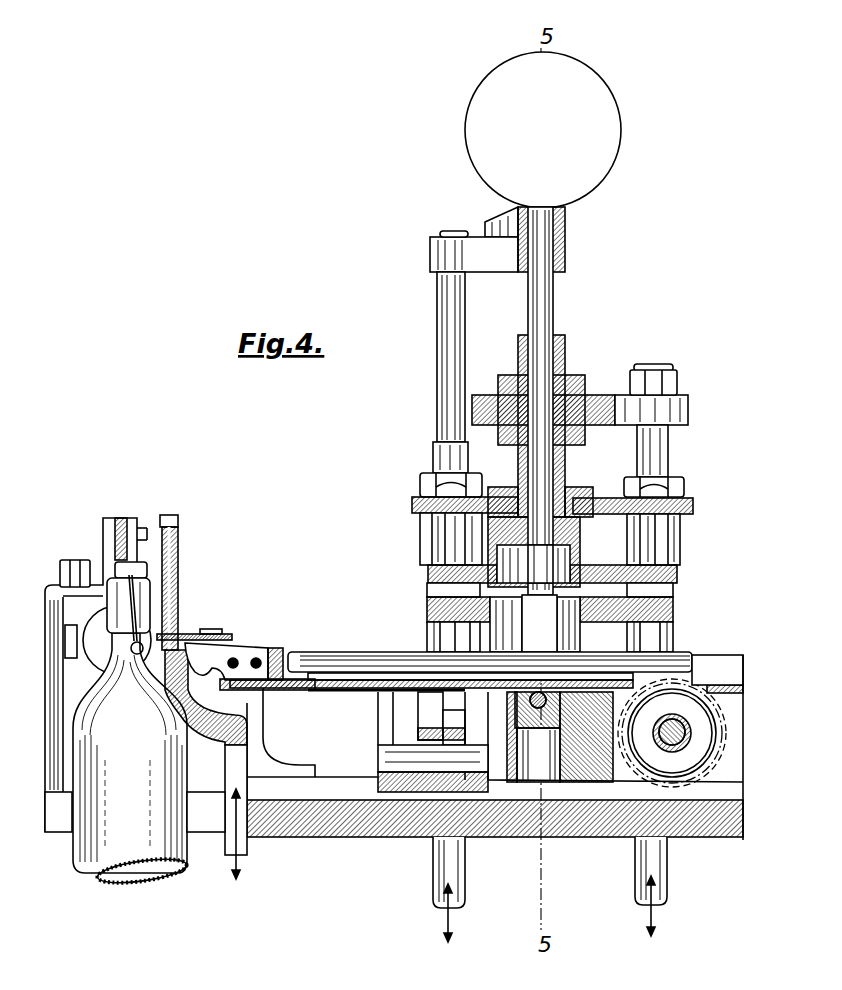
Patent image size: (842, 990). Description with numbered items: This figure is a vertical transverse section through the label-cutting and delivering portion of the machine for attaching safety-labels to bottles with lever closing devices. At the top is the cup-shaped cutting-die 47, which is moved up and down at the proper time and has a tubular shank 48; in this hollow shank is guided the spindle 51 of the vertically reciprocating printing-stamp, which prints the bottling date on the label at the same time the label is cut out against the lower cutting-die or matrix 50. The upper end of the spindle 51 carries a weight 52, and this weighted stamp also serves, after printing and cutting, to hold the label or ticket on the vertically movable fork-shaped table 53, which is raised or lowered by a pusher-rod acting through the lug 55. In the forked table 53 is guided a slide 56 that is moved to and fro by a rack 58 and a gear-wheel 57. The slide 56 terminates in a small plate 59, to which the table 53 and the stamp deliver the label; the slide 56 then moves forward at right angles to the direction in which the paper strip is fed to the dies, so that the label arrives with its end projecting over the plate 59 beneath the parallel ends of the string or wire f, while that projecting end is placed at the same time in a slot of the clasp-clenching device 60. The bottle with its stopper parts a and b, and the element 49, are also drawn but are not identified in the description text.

The cup-shaped cutting-die 47 is at (533, 564).
The tubular shank 48 is at (566, 369).
The bolt 49 is at (645, 437).
The lower cutting-die 50 is at (518, 592).
The spindle 51 is at (547, 314).
The weight 52 is at (606, 142).
The fork-shaped table 53 is at (538, 688).
The lug 55 is at (540, 698).
The slide 56 is at (330, 659).
The gear-wheel 57 is at (722, 729).
The rack 58 is at (360, 679).
The small plate 59 is at (190, 641).
The clasp-clenching device 60 is at (178, 590).
The bottle a is at (127, 805).
The bail b is at (120, 651).
The string or wire f is at (130, 760).